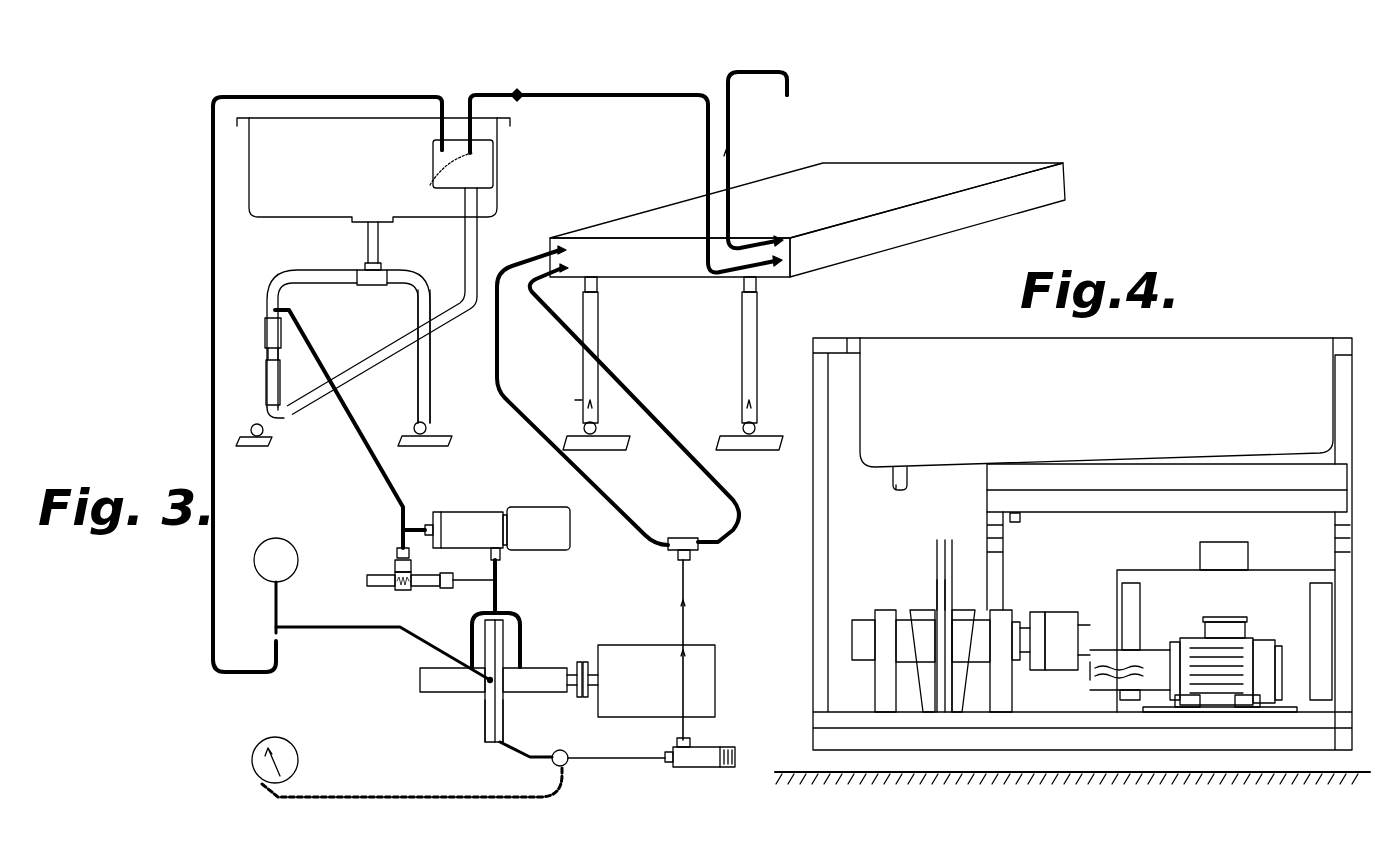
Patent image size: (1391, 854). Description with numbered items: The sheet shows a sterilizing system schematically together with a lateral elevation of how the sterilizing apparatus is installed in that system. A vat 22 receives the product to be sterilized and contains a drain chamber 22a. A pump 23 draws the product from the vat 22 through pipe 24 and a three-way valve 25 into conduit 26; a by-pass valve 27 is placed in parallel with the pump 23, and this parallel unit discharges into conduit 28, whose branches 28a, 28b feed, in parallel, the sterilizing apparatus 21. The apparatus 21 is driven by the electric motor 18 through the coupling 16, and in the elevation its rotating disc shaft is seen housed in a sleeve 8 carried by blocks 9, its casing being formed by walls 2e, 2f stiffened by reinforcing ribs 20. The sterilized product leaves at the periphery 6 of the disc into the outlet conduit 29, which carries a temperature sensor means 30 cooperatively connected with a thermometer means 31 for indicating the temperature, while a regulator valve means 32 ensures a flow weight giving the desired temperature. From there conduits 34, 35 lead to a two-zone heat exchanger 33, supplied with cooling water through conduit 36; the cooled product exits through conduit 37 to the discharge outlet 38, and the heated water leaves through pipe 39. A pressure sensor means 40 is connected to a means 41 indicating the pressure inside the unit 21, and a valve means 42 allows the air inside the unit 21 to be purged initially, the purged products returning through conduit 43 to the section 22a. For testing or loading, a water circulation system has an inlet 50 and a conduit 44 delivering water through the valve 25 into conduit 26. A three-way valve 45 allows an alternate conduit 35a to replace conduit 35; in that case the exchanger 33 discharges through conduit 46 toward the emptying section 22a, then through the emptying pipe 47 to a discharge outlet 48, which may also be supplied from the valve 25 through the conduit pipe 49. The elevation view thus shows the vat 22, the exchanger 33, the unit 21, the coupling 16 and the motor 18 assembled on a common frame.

In FIG. 3, the wall 2e is at (505, 713).
In FIG. 4, the wall 2e is at (947, 603).
In FIG. 3, the wall 2f is at (485, 718).
In FIG. 4, the wall 2f is at (938, 607).
In FIG. 3, the periphery of the rotating disc 6 is at (498, 745).
In FIG. 4, the sleeve 8 is at (908, 653).
In FIG. 4, the blocks 9 is at (882, 620).
In FIG. 3, the coupling 16 is at (583, 660).
In FIG. 4, the coupling 16 is at (1053, 613).
In FIG. 3, the electric motor 18 is at (640, 654).
In FIG. 4, the electric motor 18 is at (1235, 645).
In FIG. 4, the reinforcing ribs 20 is at (973, 610).
In FIG. 3, the sterilizing apparatus 21 is at (520, 660).
In FIG. 4, the sterilizing apparatus 21 is at (947, 541).
In FIG. 3, the vat 22 is at (272, 212).
In FIG. 4, the vat 22 is at (1255, 345).
In FIG. 3, the drain chamber 22a is at (494, 168).
In FIG. 3, the pump 23 is at (460, 520).
In FIG. 3, the pipe 24 is at (366, 250).
In FIG. 3, the three-way valve 25 is at (372, 286).
In FIG. 3, the conduit 26 is at (353, 430).
In FIG. 3, the by-pass valve 27 is at (395, 575).
In FIG. 3, the conduit 28 is at (500, 610).
In FIG. 3, the branch 28a is at (471, 633).
In FIG. 3, the branch 28b is at (522, 666).
In FIG. 3, the outlet conduit 29 is at (629, 762).
In FIG. 3, the temperature sensor means 30 is at (570, 745).
In FIG. 3, the gauge 31 is at (283, 729).
In FIG. 3, the regulator valve means 32 is at (703, 753).
In FIG. 3, the two-zone heat exchanger 33 is at (915, 172).
In FIG. 4, the two-zone heat exchanger 33 is at (1252, 473).
In FIG. 3, the conduit 34 is at (690, 600).
In FIG. 3, the conduit 35 is at (533, 425).
In FIG. 3, the alternate conduit 35a is at (650, 417).
In FIG. 3, the conduit 36 is at (598, 316).
In FIG. 3, the conduit 37 is at (730, 150).
In FIG. 3, the discharge outlet 38 is at (789, 97).
In FIG. 3, the pipe 39 is at (758, 320).
In FIG. 3, the pressure sensor means 40 is at (495, 682).
In FIG. 3, the pressure indicating means 41 is at (272, 542).
In FIG. 3, the valve means 42 is at (282, 652).
In FIG. 3, the conduit 43 is at (212, 300).
In FIG. 3, the conduit 44 is at (431, 372).
In FIG. 3, the three-way valve 45 is at (683, 538).
In FIG. 3, the conduit 46 is at (598, 94).
In FIG. 3, the emptying pipe 47 is at (479, 270).
In FIG. 3, the discharge outlet 48 is at (263, 436).
In FIG. 3, the conduit pipe 49 is at (265, 338).
In FIG. 3, the inlet 50 is at (427, 428).